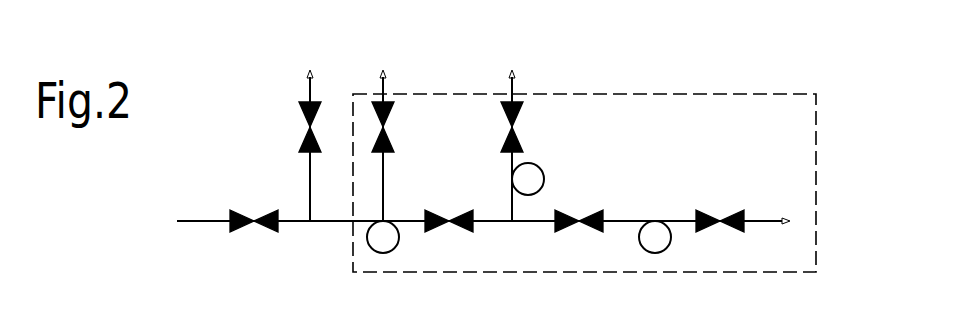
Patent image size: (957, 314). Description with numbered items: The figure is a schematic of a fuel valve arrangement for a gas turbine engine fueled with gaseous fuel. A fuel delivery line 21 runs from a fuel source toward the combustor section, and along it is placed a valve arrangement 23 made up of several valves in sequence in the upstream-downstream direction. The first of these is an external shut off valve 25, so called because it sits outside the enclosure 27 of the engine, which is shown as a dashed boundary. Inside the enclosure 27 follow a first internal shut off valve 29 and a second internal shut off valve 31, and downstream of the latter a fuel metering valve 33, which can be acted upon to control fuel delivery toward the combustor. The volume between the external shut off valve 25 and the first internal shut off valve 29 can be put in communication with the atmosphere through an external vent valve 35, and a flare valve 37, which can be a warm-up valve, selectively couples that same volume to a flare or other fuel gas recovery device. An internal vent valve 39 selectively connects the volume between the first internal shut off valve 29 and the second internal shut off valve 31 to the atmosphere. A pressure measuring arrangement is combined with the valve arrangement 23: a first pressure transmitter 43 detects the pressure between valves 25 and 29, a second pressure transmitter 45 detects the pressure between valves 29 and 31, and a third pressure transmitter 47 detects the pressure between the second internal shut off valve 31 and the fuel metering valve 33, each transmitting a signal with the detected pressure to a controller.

The fuel delivery line 21 is at (330, 223).
The valve arrangement 23 is at (840, 84).
The external shut off valve 25 is at (267, 210).
The enclosure 27 is at (622, 94).
The first internal shut off valve 29 is at (465, 210).
The second internal shut off valve 31 is at (595, 211).
The fuel metering valve 33 is at (735, 211).
The external vent valve 35 is at (301, 112).
The flare valve 37 is at (393, 141).
The internal vent valve 39 is at (522, 141).
The first pressure transmitter 43 is at (396, 248).
The second pressure transmitter 45 is at (544, 177).
The third pressure transmitter 47 is at (667, 248).